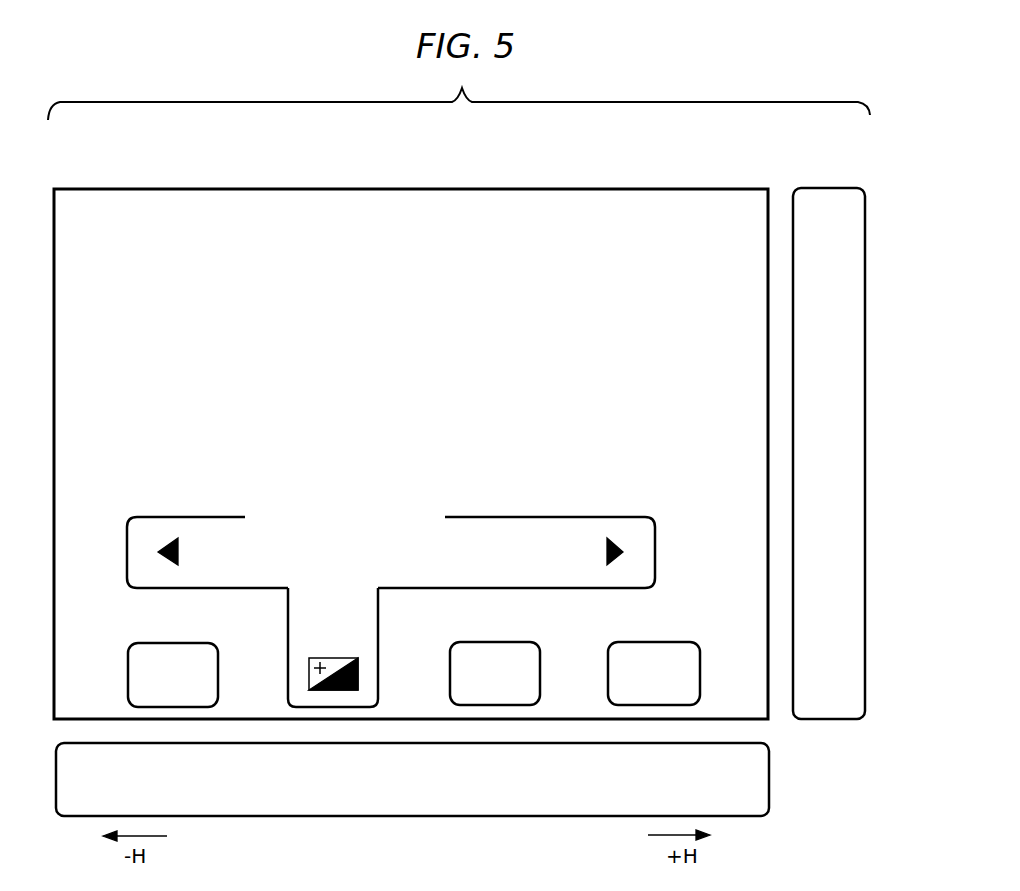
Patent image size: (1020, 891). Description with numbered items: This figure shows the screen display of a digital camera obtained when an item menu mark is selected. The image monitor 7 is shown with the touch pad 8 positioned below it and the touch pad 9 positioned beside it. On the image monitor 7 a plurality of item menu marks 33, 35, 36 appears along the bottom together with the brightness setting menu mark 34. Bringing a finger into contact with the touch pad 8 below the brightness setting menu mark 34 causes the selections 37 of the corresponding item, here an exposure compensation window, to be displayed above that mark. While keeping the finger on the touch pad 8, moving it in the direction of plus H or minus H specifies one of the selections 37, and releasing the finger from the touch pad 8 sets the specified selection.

The image monitor 7 is at (410, 189).
The touch pad 8 is at (770, 777).
The touch pad 9 is at (830, 188).
The item menu mark 33 is at (175, 643).
The brightness setting menu mark 34 is at (378, 634).
The item menu mark 35 is at (495, 642).
The item menu mark 36 is at (655, 642).
The selections 37 is at (492, 517).